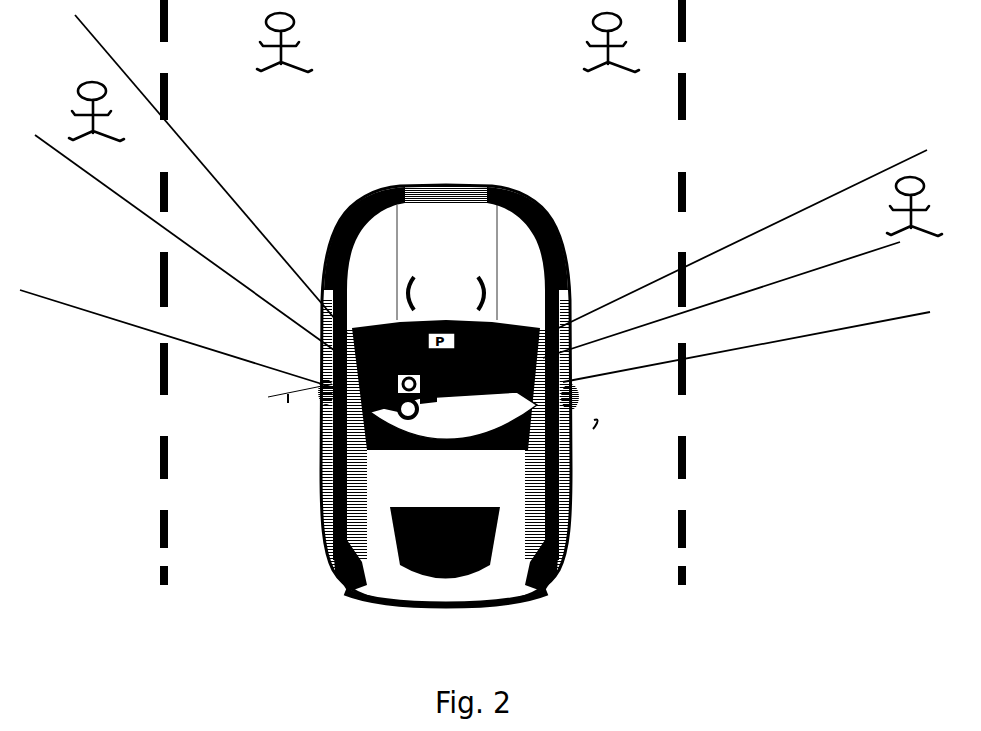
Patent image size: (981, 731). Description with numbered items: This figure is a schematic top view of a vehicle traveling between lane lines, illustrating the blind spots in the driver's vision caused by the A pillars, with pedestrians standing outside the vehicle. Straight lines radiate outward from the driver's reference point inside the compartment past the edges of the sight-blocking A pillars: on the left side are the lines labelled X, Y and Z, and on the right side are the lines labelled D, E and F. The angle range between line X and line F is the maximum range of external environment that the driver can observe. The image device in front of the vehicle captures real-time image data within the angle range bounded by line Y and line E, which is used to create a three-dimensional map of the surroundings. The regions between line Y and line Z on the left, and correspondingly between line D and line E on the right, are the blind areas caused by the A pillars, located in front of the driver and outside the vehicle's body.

The sight line OZ Z is at (197, 174).
The sight line OY Y is at (188, 232).
The sight line OX X is at (179, 339).
The sight line OD D is at (737, 231).
The sight line OE E is at (721, 300).
The sight line OF F is at (746, 347).